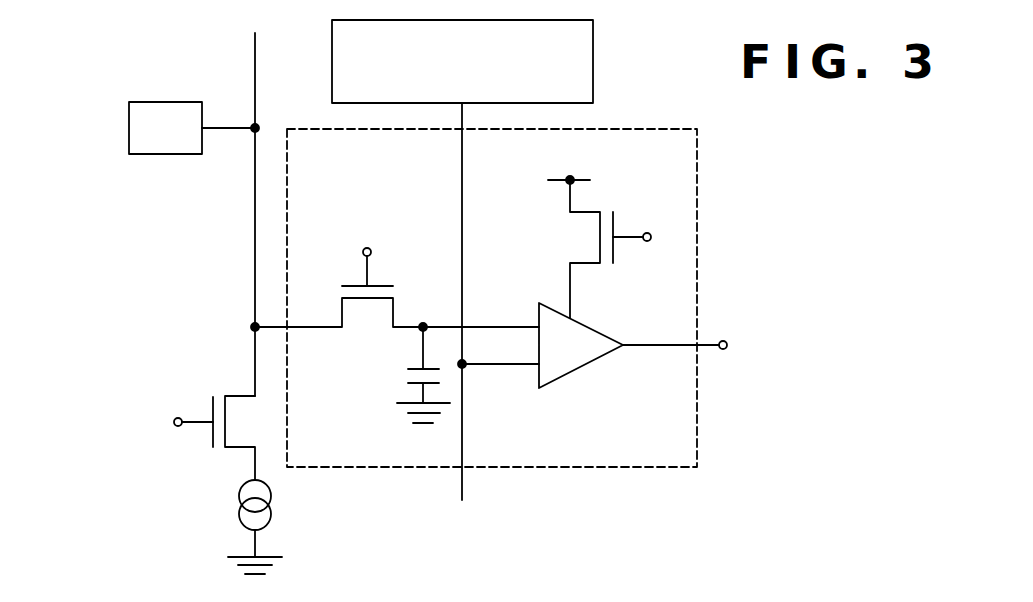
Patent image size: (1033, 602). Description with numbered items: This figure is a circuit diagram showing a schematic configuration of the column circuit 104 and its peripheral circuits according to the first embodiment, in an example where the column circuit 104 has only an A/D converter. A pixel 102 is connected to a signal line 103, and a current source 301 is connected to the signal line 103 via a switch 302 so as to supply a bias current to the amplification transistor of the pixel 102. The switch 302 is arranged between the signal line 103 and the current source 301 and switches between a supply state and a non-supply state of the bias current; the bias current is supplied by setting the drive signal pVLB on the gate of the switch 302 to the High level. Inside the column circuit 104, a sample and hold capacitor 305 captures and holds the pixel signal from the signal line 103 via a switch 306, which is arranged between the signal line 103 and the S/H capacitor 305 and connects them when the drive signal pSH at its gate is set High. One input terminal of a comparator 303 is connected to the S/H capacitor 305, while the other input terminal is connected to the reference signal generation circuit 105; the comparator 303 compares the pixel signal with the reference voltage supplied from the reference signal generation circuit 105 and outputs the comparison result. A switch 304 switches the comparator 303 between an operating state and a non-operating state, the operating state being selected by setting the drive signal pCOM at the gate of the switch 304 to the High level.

The pixel 102 is at (129, 112).
The signal line 103 is at (255, 48).
The column circuit 104 is at (650, 129).
The reference signal generation circuit 105 is at (593, 35).
The current source 301 is at (241, 491).
The switch 302 is at (241, 396).
The comparator 303 is at (578, 370).
The switch 304 is at (568, 237).
The sample and hold capacitor 305 is at (406, 375).
The switch 306 is at (393, 317).